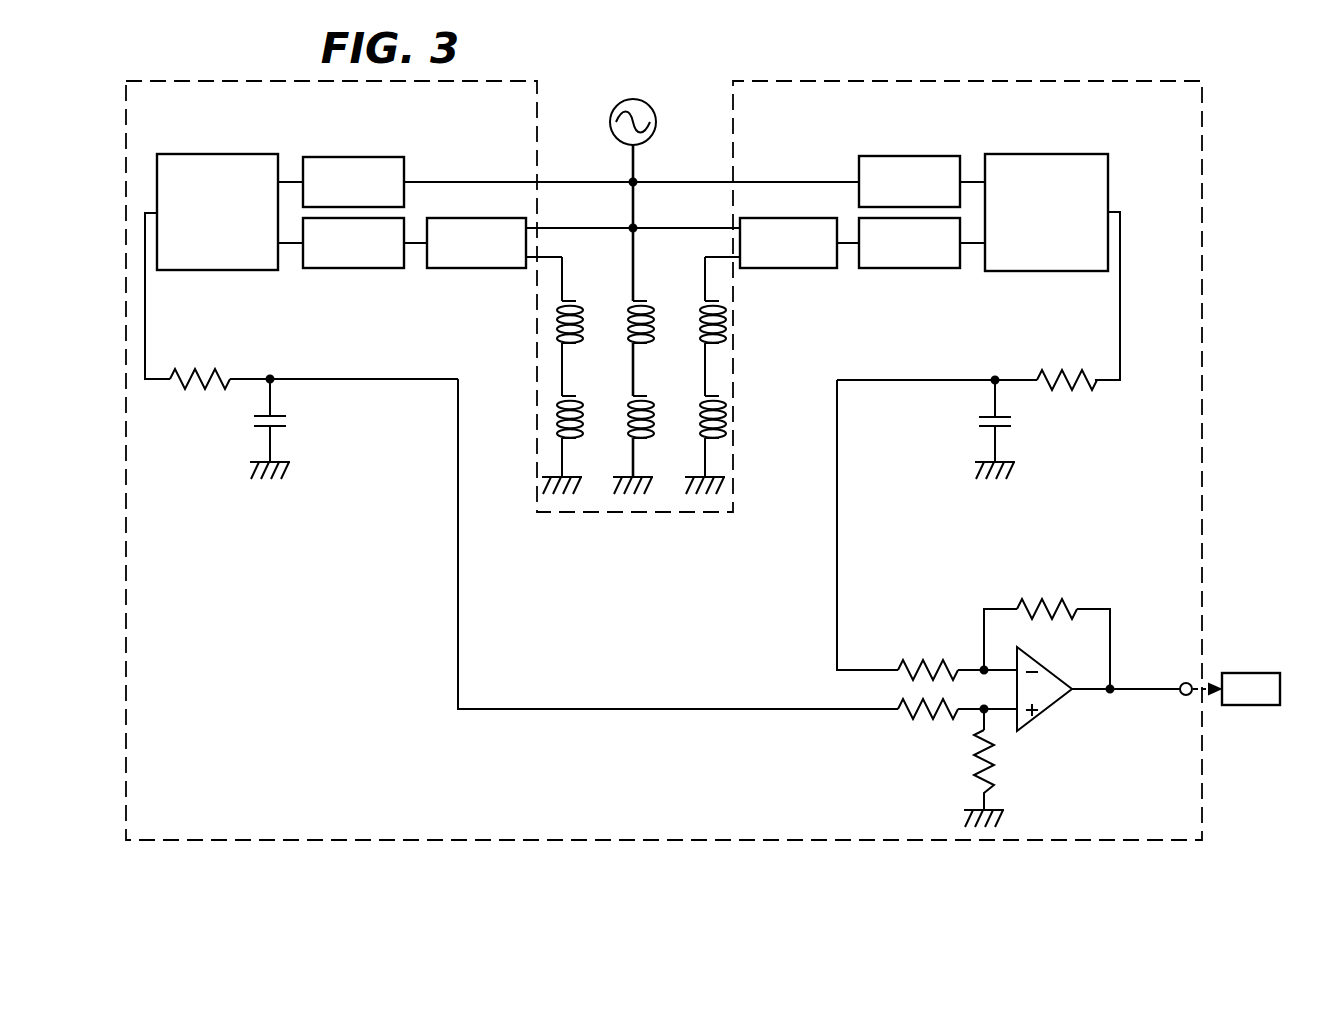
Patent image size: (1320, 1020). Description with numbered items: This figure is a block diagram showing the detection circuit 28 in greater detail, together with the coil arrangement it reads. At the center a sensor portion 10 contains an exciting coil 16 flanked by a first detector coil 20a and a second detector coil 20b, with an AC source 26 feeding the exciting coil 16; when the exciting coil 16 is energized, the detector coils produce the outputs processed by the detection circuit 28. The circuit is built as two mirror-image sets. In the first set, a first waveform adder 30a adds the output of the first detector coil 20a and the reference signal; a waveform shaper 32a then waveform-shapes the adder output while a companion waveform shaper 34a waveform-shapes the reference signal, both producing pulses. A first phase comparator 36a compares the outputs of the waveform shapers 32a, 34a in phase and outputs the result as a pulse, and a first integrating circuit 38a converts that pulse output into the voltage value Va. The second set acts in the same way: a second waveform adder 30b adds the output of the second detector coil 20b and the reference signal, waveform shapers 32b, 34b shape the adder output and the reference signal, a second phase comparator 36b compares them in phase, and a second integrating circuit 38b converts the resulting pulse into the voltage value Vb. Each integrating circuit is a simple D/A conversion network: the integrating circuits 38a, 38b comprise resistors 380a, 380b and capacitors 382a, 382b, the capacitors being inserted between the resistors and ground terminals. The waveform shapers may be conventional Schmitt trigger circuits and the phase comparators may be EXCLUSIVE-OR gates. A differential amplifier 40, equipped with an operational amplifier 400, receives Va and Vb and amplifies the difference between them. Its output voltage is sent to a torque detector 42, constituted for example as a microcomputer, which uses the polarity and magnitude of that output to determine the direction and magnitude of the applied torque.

The sensor 10 is at (584, 158).
The exciting coil 16 is at (633, 348).
The first detector coil 20a is at (562, 348).
The second detector coil 20b is at (705, 348).
The AC power source 26 is at (657, 118).
The detection circuit 28 is at (1018, 78).
The first waveform adder 30a is at (482, 270).
The second waveform adder 30b is at (790, 270).
The first waveform shaper 32a is at (369, 270).
The second waveform shaper 32b is at (910, 270).
The first waveform shaper 34a is at (368, 157).
The second waveform shaper 34b is at (911, 156).
The first phase comparator 36a is at (237, 155).
The second phase comparator 36b is at (1024, 154).
The first integrating circuit 38a is at (301, 346).
The second integrating circuit 38b is at (978, 347).
The resistor 380a is at (200, 366).
The resistor 380b is at (1058, 386).
The capacitor 382a is at (256, 430).
The capacitor 382b is at (1010, 427).
The differential amplifier 40 is at (1045, 680).
The operational amplifier 400 is at (1054, 708).
The torque detector 42 is at (1236, 689).